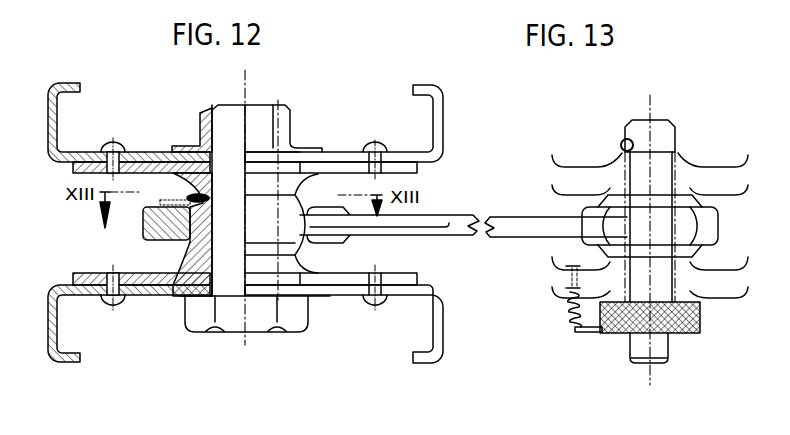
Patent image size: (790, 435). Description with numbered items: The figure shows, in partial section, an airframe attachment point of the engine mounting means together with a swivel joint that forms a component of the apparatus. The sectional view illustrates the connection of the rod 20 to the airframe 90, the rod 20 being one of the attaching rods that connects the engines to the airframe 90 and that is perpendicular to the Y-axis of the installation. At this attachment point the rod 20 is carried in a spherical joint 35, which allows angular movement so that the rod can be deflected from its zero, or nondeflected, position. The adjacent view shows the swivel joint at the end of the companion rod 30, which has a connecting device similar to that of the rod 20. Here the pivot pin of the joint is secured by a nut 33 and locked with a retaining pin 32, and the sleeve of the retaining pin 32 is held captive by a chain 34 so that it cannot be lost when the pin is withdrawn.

In FIG. 12, the rod 20 is at (445, 228).
In FIG. 13, the rod 30 is at (513, 217).
In FIG. 13, the retaining pin 32 is at (583, 333).
In FIG. 13, the nut 33 is at (621, 334).
In FIG. 13, the chain 34 is at (561, 296).
In FIG. 12, the spherical joint 35 is at (177, 258).
In FIG. 12, the airframe 90 is at (438, 140).